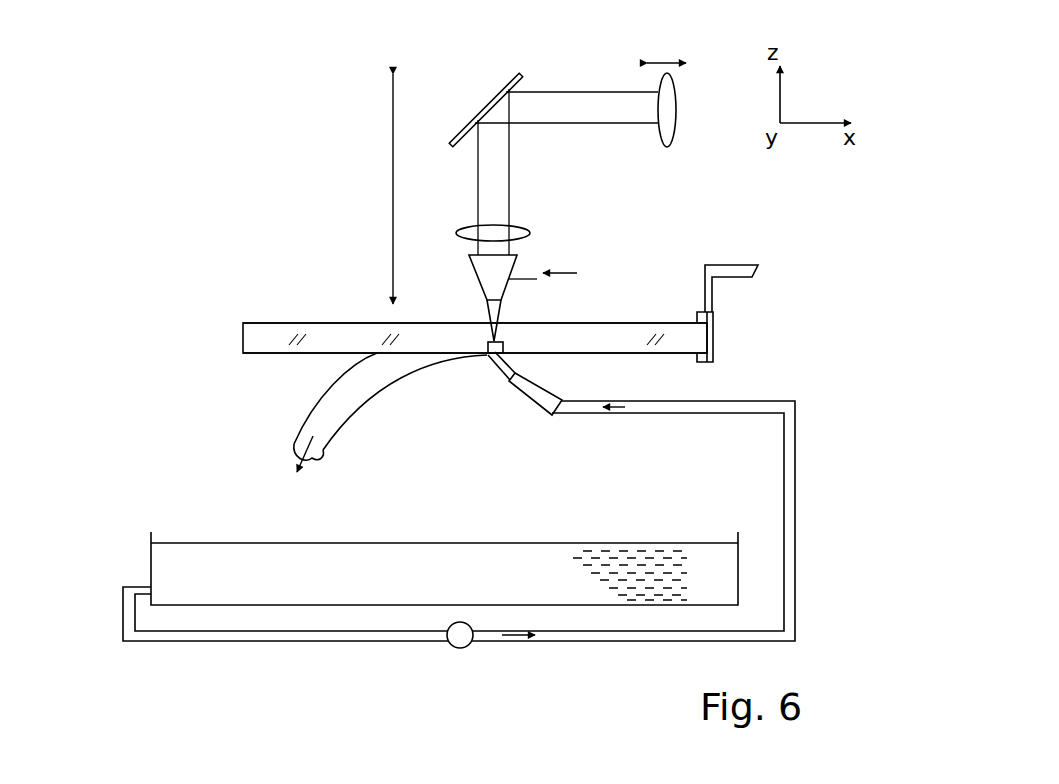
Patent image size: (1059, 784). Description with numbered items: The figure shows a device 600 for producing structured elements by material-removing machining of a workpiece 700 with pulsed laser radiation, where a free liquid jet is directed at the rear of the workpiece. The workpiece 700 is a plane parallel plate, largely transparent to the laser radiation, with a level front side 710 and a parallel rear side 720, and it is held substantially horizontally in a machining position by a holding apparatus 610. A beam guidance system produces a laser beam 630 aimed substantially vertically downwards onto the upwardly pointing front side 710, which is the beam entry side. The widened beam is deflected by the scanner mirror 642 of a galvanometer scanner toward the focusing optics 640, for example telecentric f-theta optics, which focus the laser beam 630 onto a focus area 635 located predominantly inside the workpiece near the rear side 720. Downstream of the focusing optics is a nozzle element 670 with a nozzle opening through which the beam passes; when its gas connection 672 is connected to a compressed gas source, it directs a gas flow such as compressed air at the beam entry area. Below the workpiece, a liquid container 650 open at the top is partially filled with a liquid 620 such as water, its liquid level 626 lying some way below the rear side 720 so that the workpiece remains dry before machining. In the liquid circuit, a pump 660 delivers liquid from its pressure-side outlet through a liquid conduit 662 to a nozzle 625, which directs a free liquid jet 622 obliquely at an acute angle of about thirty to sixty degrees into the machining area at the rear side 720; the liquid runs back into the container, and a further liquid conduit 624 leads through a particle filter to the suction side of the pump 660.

The device 600 is at (236, 256).
The scanner mirror 642 is at (507, 81).
The focusing optics 640 is at (523, 236).
The nozzle element 670 is at (488, 272).
The gas connection 672 is at (512, 270).
The laser beam 630 is at (492, 317).
The focus area 635 is at (495, 338).
The workpiece 700 is at (250, 337).
The front side 710 is at (257, 322).
The rear side 720 is at (257, 355).
The holding apparatus 610 is at (707, 320).
The free liquid jet 622 is at (497, 366).
The nozzle 625 is at (540, 395).
The liquid conduit 662 is at (794, 452).
The further liquid conduit 624 is at (128, 614).
The pump 660 is at (463, 642).
The liquid 620 is at (723, 579).
The liquid container 650 is at (739, 533).
The liquid level 626 is at (722, 540).